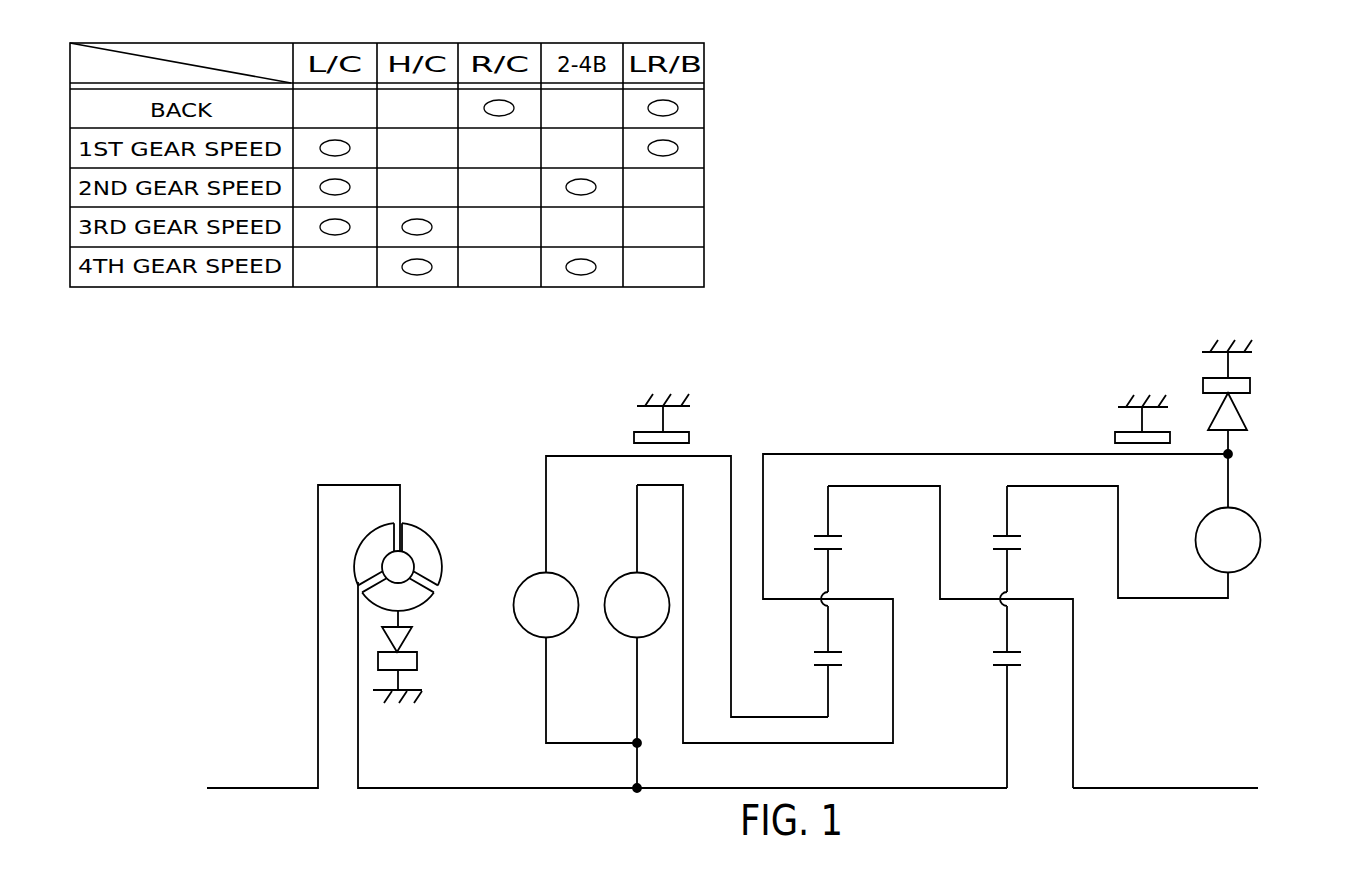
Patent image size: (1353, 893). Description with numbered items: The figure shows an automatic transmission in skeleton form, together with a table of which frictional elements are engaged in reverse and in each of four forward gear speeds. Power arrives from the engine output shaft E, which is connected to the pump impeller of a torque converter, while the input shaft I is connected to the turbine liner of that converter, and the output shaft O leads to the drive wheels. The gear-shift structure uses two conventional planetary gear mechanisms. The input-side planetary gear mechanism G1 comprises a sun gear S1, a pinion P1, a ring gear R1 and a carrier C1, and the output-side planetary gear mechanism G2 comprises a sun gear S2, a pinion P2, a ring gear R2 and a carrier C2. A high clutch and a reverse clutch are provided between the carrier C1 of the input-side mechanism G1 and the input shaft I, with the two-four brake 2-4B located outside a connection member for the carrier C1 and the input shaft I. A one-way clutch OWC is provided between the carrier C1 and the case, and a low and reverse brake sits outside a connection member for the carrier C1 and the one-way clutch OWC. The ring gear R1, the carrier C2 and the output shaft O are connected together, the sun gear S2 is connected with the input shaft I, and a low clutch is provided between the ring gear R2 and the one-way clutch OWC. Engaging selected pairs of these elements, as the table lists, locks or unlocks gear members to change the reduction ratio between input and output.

The output shaft of an engine E is at (262, 788).
The input shaft I is at (462, 788).
The output shaft O is at (1135, 787).
The 2-4 brake 2-4B is at (634, 433).
The one-way clutch OWC is at (1243, 413).
The input-side planetary gear mechanism G1 is at (807, 554).
The output-side planetary gear mechanism G2 is at (987, 589).
The ring gear R1 is at (828, 510).
The carrier C1 is at (787, 599).
The pinion P1 is at (828, 626).
The sun gear S1 is at (828, 689).
The ring gear R2 is at (1007, 510).
The carrier C2 is at (967, 599).
The pinion P2 is at (1007, 626).
The sun gear S2 is at (1007, 710).